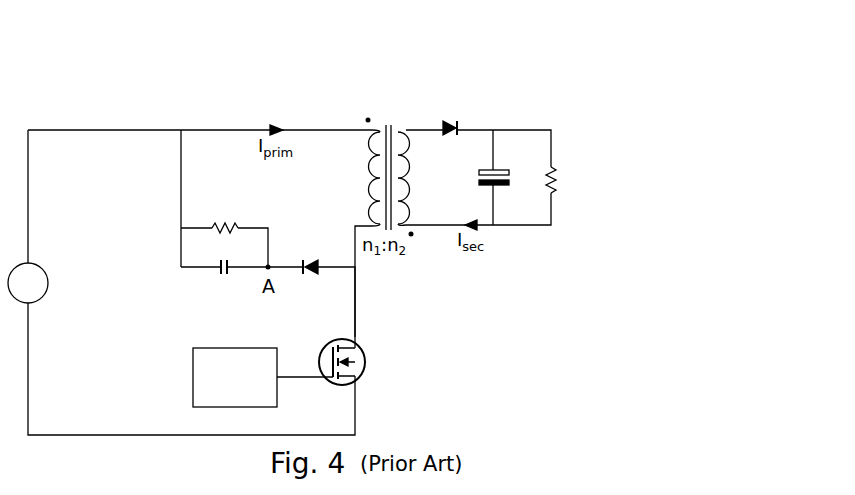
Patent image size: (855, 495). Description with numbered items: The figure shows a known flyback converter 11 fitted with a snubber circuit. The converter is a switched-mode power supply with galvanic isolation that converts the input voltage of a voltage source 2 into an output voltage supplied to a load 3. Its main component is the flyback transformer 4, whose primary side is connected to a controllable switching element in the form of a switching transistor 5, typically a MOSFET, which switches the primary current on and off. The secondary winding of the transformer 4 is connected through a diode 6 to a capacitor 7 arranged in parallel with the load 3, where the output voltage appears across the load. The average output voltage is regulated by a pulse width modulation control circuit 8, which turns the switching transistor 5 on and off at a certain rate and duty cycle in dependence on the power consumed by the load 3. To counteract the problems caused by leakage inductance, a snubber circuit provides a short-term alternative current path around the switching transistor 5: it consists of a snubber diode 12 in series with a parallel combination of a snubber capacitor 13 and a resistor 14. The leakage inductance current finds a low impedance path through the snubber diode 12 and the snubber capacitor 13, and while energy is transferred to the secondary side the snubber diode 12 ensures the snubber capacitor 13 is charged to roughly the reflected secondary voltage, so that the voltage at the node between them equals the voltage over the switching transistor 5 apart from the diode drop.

The voltage source 2 is at (44, 268).
The load 3 is at (546, 190).
The flyback transformer 4 is at (366, 157).
The switching transistor 5 is at (361, 378).
The diode 6 is at (447, 137).
The capacitor 7 is at (500, 173).
The pulse width modulation control circuit 8 is at (190, 396).
The flyback converter 11 is at (498, 355).
The snubber diode 12 is at (309, 279).
The snubber capacitor 13 is at (215, 272).
The resistor 14 is at (217, 223).